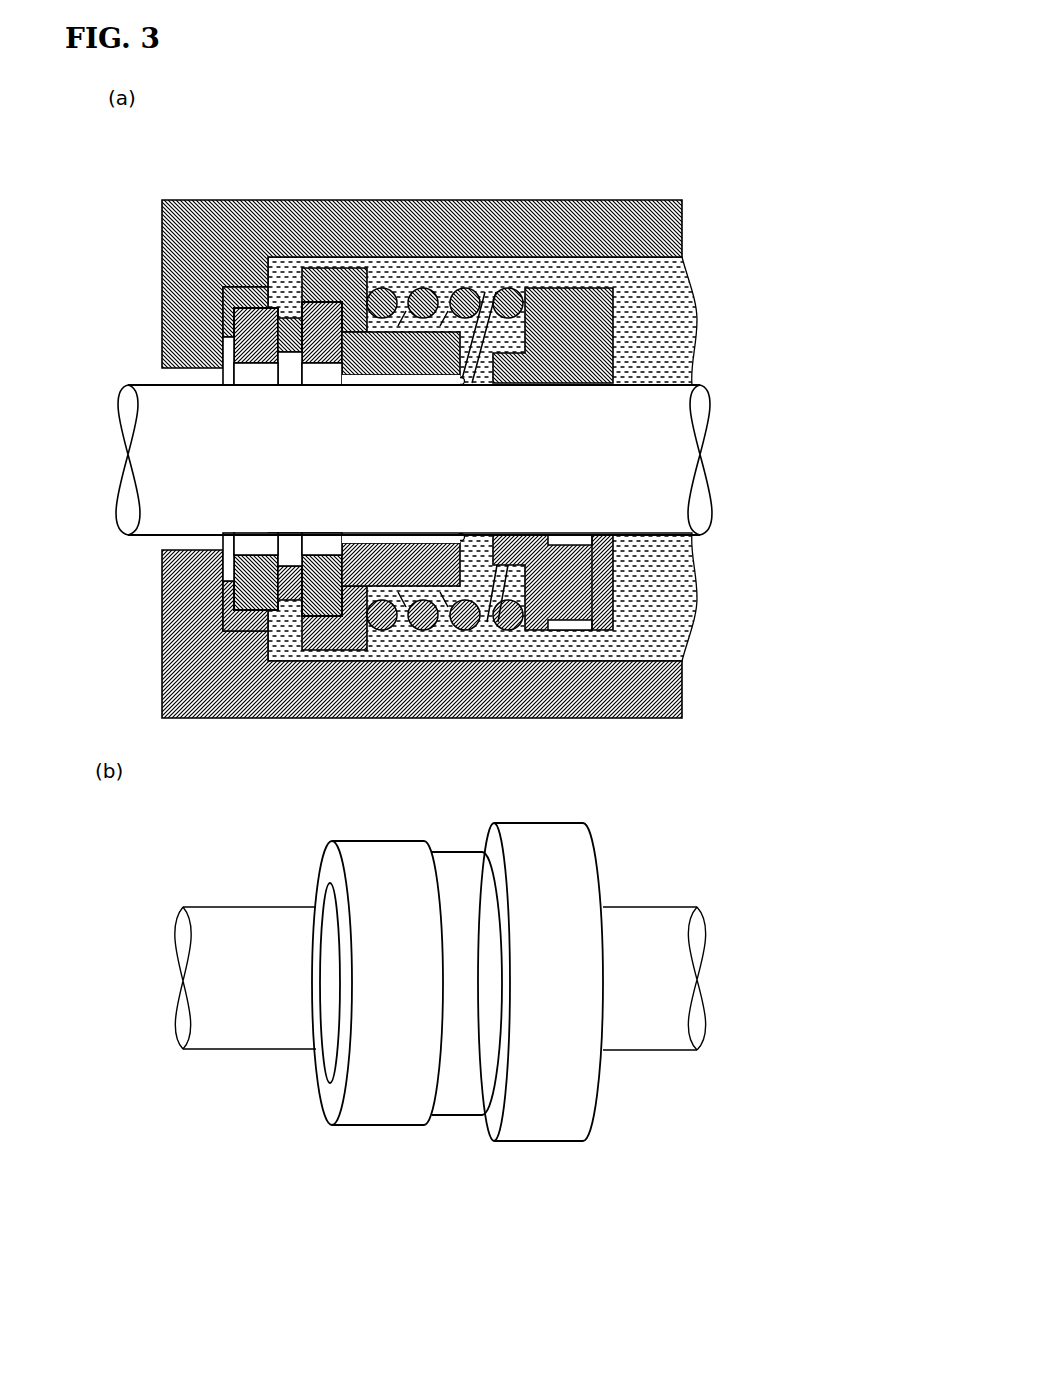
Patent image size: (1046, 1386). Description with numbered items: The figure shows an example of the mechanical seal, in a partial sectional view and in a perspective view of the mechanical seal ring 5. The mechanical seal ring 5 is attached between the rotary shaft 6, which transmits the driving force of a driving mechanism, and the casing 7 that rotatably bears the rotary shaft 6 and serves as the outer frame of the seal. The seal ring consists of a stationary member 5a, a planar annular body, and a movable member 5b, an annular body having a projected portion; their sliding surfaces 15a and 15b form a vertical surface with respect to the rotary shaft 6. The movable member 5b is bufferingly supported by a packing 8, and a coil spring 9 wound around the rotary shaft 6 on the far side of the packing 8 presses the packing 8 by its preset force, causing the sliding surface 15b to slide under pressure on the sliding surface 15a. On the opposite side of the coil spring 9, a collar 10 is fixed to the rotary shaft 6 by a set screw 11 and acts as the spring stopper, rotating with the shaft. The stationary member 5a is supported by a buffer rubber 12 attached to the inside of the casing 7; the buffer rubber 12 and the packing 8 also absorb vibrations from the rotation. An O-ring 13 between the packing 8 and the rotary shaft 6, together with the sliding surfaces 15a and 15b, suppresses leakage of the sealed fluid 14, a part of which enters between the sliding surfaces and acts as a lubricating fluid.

The mechanical seal ring 5 is at (262, 160).
The stationary member 5a is at (255, 323).
The movable member 5b is at (327, 300).
The rotary shaft 6 is at (163, 423).
The casing 7 is at (180, 273).
The packing 8 is at (347, 268).
The coil spring 9 is at (462, 300).
The collar 10 is at (590, 337).
The set screw 11 is at (580, 608).
The buffer rubber 12 is at (235, 267).
The O-ring 13 is at (461, 383).
The sealed fluid 14 is at (660, 345).
The sliding surface 15a is at (302, 557).
The sliding surface 15b is at (222, 333).